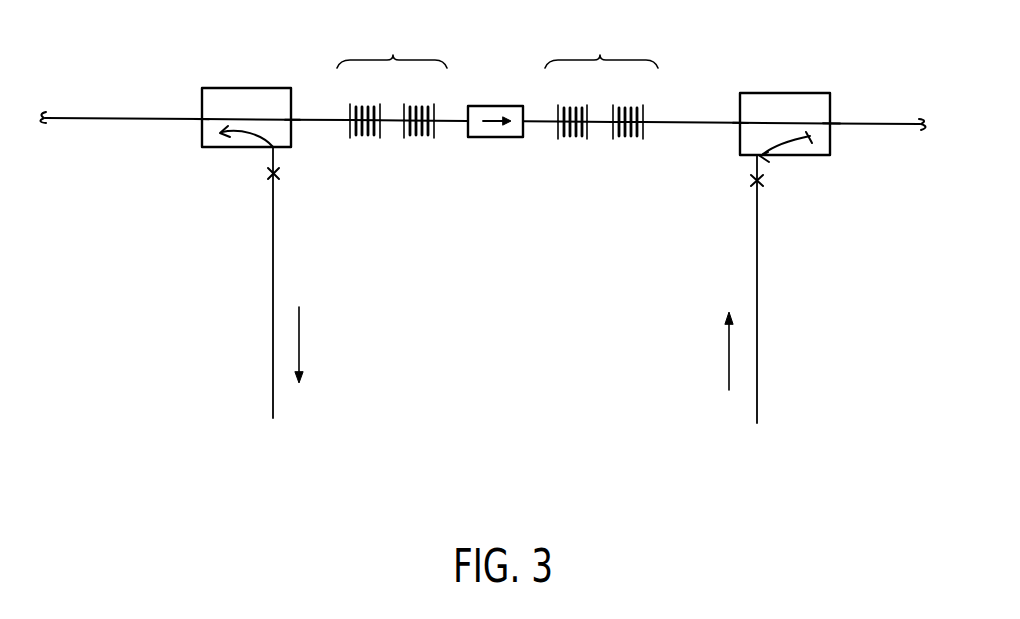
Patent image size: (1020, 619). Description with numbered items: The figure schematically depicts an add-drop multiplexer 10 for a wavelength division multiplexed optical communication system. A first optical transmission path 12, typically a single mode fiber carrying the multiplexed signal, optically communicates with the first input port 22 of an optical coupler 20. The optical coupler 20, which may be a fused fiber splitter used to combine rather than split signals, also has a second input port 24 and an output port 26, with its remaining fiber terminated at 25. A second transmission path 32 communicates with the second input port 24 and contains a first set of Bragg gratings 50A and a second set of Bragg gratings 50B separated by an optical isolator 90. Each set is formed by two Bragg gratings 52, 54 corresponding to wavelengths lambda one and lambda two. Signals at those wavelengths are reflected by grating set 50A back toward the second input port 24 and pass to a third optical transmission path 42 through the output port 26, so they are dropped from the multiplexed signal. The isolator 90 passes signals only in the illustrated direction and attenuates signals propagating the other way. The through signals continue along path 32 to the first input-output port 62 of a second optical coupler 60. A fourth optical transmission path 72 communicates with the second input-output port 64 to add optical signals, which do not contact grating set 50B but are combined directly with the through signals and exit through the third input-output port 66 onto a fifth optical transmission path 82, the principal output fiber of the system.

The add-drop multiplexer 10 is at (504, 249).
The first optical transmission path 12 is at (93, 117).
The optical coupler 20 is at (222, 88).
The first input port 22 is at (202, 118).
The second input port 24 is at (270, 147).
The terminated optical fiber 25 is at (233, 147).
The output port 26 is at (293, 118).
The second transmission path 32 is at (325, 119).
The third optical transmission path 42 is at (275, 270).
The first set of Bragg gratings 50A is at (392, 70).
The second set of Bragg gratings 50B is at (601, 68).
The Bragg grating 52 is at (363, 138).
The Bragg grating 54 is at (417, 138).
The second optical coupler 60 is at (787, 118).
The first input-output port 62 is at (740, 123).
The second input-output port 64 is at (764, 155).
The third input-output port 66 is at (831, 123).
The fourth optical transmission path 72 is at (757, 262).
The fifth optical transmission path 82 is at (885, 124).
The optical isolator 90 is at (500, 106).